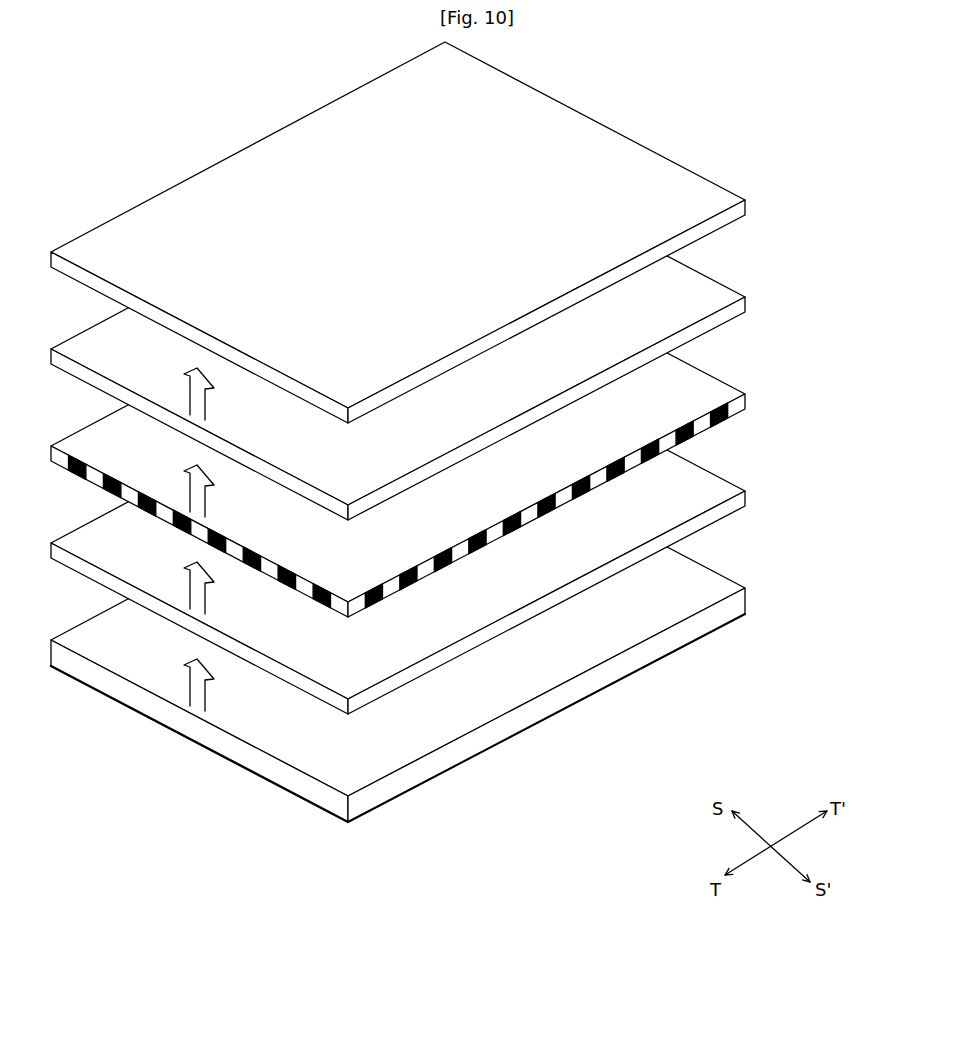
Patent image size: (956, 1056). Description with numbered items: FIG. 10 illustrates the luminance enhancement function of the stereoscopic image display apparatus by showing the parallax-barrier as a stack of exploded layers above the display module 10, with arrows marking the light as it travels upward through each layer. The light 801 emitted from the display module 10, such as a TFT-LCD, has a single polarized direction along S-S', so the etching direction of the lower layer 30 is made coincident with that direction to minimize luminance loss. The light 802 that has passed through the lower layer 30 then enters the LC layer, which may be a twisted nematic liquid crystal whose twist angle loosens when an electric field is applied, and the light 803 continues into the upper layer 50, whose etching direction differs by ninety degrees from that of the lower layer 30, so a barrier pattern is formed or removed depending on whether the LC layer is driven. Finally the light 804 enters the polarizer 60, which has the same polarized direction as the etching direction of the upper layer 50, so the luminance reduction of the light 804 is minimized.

The display module 10 is at (745, 600).
The lower layer 30 is at (745, 495).
The upper layer 50 is at (745, 301).
The polarizer 60 is at (745, 204).
The light 801 is at (219, 687).
The light 802 is at (219, 590).
The light 803 is at (219, 493).
The light 804 is at (219, 396).